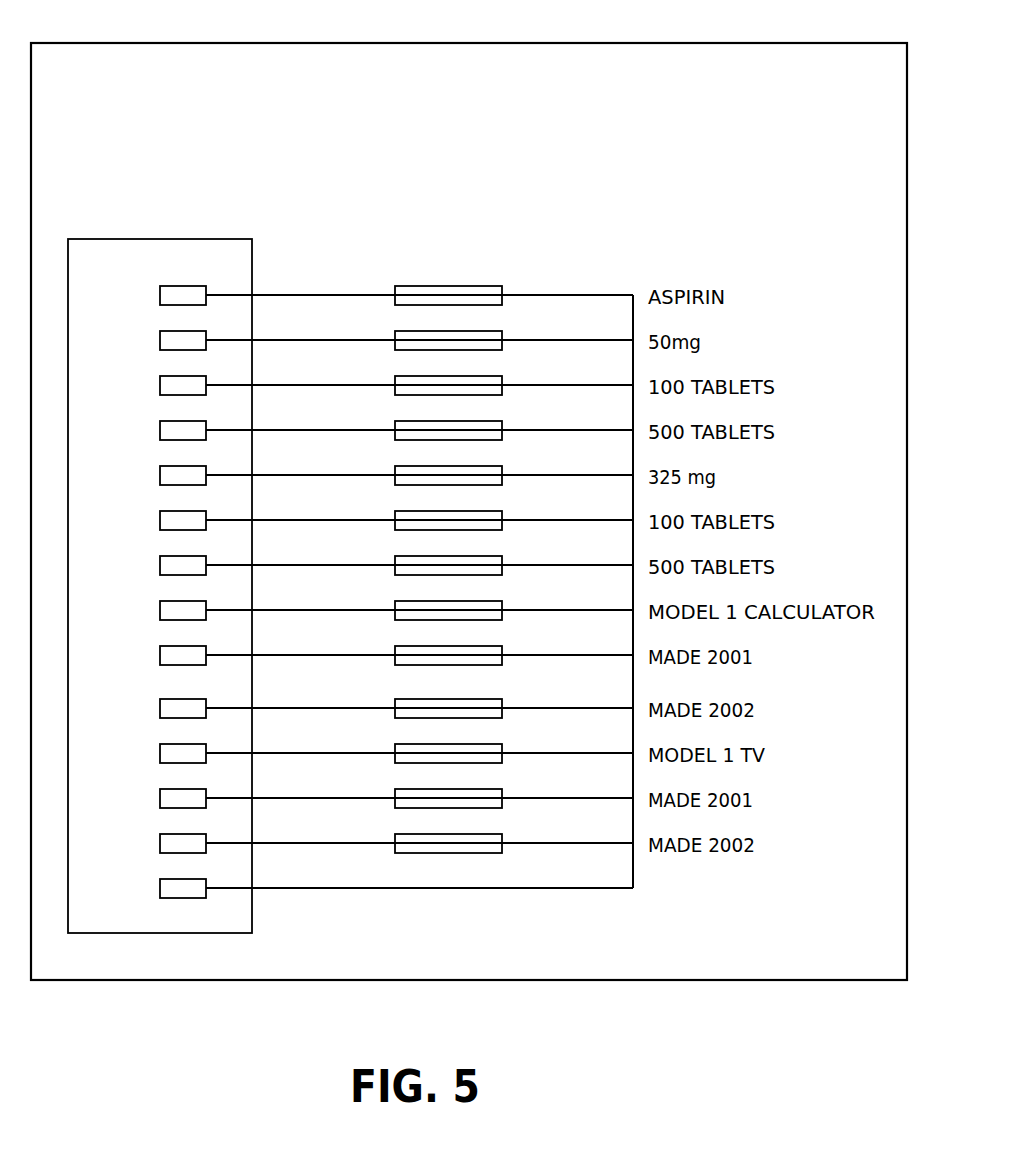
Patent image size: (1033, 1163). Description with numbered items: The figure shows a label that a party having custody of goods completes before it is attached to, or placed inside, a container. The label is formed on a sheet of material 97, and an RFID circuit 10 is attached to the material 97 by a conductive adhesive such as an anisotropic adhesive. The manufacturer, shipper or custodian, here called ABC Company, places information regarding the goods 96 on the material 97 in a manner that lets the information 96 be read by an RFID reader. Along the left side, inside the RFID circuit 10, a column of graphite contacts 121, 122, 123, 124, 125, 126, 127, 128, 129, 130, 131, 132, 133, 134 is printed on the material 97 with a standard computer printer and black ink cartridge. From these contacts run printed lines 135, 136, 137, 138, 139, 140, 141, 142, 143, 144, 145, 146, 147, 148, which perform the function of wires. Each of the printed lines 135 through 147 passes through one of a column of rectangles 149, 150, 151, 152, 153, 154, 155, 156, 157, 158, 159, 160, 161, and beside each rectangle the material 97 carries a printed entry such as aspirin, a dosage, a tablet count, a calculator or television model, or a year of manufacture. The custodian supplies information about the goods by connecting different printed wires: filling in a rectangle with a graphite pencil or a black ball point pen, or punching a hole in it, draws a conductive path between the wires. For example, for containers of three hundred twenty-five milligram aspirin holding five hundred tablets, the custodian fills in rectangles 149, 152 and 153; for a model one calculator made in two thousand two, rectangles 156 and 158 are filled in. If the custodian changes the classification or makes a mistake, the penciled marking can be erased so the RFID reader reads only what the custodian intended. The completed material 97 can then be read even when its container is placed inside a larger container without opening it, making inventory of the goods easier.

The material 97 is at (318, 43).
The information regarding the goods 96 is at (498, 162).
The RFID circuit 10 is at (165, 239).
The graphite contact 121 is at (163, 287).
The graphite contact 122 is at (163, 332).
The graphite contact 123 is at (163, 377).
The graphite contact 124 is at (163, 422).
The graphite contact 125 is at (163, 467).
The graphite contact 126 is at (163, 512).
The graphite contact 127 is at (163, 557).
The graphite contact 128 is at (163, 602).
The graphite contact 129 is at (163, 647).
The graphite contact 130 is at (163, 700).
The graphite contact 131 is at (163, 745).
The graphite contact 132 is at (163, 790).
The graphite contact 133 is at (163, 835).
The graphite contact 134 is at (163, 880).
The printed line 135 is at (342, 294).
The printed line 136 is at (342, 339).
The printed line 137 is at (342, 384).
The printed line 138 is at (342, 429).
The printed line 139 is at (342, 474).
The printed line 140 is at (342, 519).
The printed line 141 is at (342, 564).
The printed line 142 is at (342, 609).
The printed line 143 is at (342, 654).
The printed line 144 is at (342, 707).
The printed line 145 is at (342, 752).
The printed line 146 is at (342, 797).
The printed line 147 is at (342, 842).
The printed line 148 is at (362, 887).
The rectangle 149 is at (495, 285).
The rectangle 150 is at (495, 330).
The rectangle 151 is at (495, 375).
The rectangle 152 is at (495, 420).
The rectangle 153 is at (495, 465).
The rectangle 154 is at (495, 510).
The rectangle 155 is at (495, 555).
The rectangle 156 is at (495, 600).
The rectangle 157 is at (495, 645).
The rectangle 158 is at (495, 698).
The rectangle 159 is at (495, 743).
The rectangle 160 is at (495, 788).
The rectangle 161 is at (495, 833).